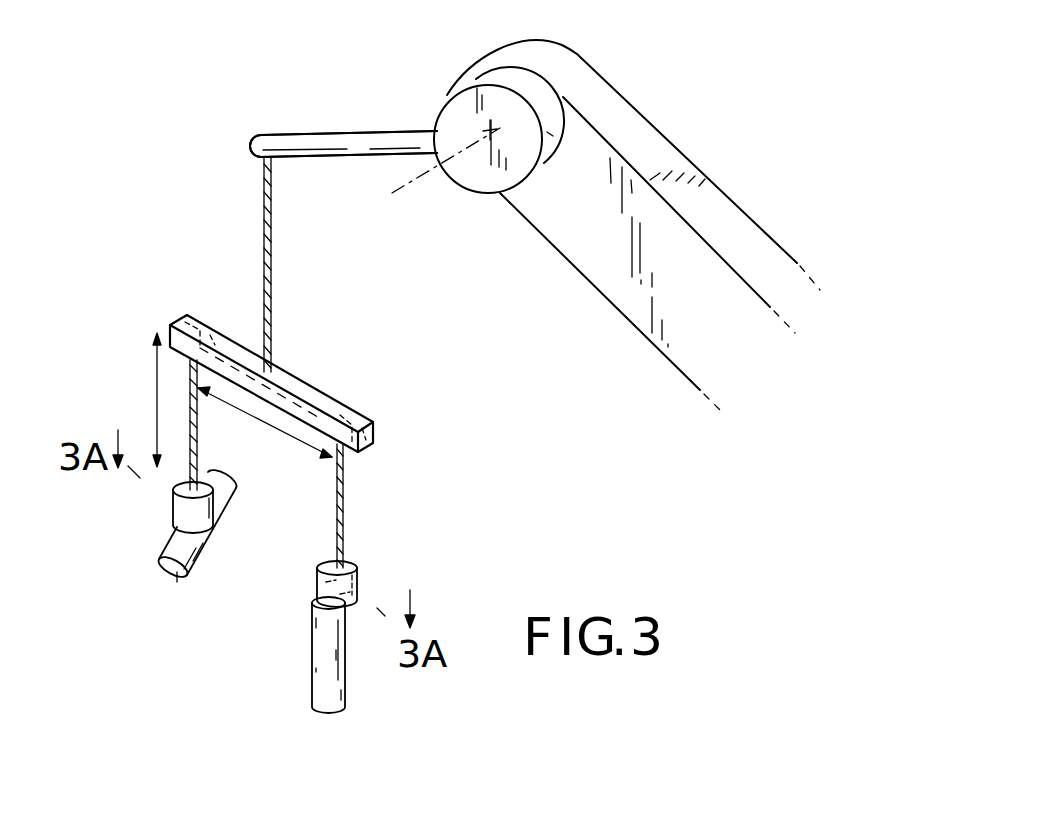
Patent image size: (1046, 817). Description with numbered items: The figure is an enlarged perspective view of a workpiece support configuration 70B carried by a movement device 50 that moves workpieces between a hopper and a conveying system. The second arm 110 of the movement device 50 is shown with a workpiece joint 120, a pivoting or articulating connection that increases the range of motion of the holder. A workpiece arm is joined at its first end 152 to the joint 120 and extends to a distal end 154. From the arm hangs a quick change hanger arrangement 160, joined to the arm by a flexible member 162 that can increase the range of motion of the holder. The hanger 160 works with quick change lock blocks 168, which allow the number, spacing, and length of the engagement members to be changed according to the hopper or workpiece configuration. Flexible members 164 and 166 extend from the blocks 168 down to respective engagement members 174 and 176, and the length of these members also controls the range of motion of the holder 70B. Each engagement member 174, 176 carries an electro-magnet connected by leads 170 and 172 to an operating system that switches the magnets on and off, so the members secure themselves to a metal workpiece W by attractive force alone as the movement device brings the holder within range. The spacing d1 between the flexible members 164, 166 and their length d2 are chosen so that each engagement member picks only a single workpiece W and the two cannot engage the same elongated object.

The movement device 50 is at (323, 133).
The workpiece support configuration 70B is at (227, 110).
The second arm 110 is at (675, 162).
The workpiece joint 120 is at (475, 173).
The first end 152 is at (422, 140).
The distal end 154 is at (255, 135).
The quick change hanger arrangement 160 is at (233, 343).
The flexible member 162 is at (263, 213).
The flexible member 164 is at (190, 420).
The flexible member 166 is at (340, 502).
The quick change lock blocks 168 is at (183, 309).
The lead 170 is at (195, 493).
The lead 172 is at (355, 563).
The engagement member 174 is at (177, 512).
The engagement member 176 is at (318, 583).
The workpiece W is at (168, 543).
The spacing d1 is at (277, 430).
The length d2 is at (155, 380).